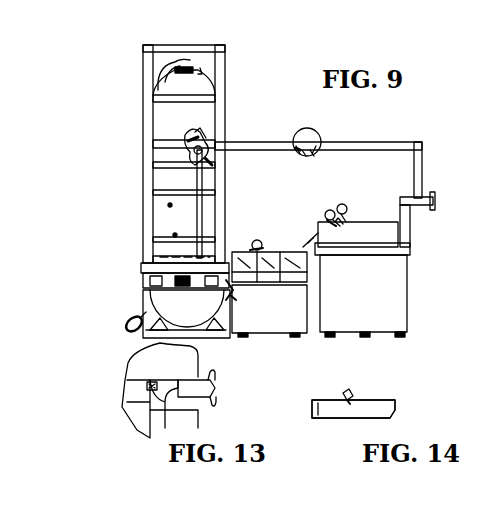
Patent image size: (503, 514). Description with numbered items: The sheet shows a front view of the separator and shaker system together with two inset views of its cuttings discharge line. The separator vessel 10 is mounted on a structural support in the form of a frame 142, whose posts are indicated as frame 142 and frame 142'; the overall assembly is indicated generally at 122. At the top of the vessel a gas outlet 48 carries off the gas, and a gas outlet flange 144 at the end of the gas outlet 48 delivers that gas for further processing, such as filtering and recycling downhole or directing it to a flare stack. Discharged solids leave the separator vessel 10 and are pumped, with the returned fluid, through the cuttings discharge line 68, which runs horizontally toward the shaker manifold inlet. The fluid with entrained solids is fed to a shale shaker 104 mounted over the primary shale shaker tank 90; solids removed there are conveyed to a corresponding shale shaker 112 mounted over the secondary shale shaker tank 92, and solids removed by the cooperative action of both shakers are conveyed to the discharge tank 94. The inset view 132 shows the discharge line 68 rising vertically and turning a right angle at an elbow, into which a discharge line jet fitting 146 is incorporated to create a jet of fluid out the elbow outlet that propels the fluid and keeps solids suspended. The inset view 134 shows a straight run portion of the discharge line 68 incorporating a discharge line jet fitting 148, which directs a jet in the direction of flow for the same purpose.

In FIG. 9, the separator vessel 10 is at (188, 123).
In FIG. 9, the gas outlet 48 is at (190, 67).
In FIG. 9, the cuttings discharge line 68 is at (348, 142).
In FIG. 13, the cuttings discharge line 68 is at (210, 373).
In FIG. 14, the cuttings discharge line 68 is at (330, 422).
In FIG. 9, the primary shale shaker tank 90 is at (378, 337).
In FIG. 9, the secondary shale shaker tank 92 is at (288, 335).
In FIG. 9, the discharge tank 94 is at (210, 333).
In FIG. 9, the shale shaker 104 is at (380, 218).
In FIG. 9, the shale shaker 112 is at (285, 250).
In FIG. 9, the growing system 122 is at (272, 82).
In FIG. 13, the inset view 132 is at (245, 407).
In FIG. 14, the inset view 134 is at (423, 410).
In FIG. 9, the frame 142 is at (246, 154).
In FIG. 9, the frame post 142' is at (125, 154).
In FIG. 9, the gas outlet flange 144 is at (130, 323).
In FIG. 9, the discharge line jet fitting 146 is at (205, 140).
In FIG. 13, the discharge line jet fitting 146 is at (155, 386).
In FIG. 9, the discharge line jet fitting 148 is at (316, 134).
In FIG. 14, the discharge line jet fitting 148 is at (352, 397).